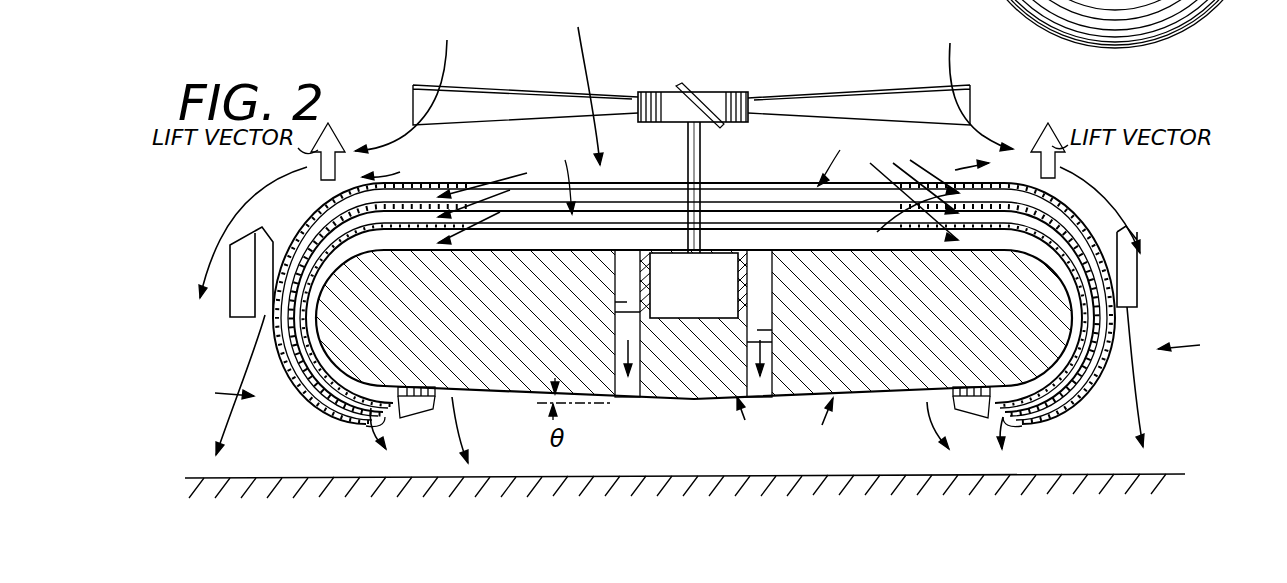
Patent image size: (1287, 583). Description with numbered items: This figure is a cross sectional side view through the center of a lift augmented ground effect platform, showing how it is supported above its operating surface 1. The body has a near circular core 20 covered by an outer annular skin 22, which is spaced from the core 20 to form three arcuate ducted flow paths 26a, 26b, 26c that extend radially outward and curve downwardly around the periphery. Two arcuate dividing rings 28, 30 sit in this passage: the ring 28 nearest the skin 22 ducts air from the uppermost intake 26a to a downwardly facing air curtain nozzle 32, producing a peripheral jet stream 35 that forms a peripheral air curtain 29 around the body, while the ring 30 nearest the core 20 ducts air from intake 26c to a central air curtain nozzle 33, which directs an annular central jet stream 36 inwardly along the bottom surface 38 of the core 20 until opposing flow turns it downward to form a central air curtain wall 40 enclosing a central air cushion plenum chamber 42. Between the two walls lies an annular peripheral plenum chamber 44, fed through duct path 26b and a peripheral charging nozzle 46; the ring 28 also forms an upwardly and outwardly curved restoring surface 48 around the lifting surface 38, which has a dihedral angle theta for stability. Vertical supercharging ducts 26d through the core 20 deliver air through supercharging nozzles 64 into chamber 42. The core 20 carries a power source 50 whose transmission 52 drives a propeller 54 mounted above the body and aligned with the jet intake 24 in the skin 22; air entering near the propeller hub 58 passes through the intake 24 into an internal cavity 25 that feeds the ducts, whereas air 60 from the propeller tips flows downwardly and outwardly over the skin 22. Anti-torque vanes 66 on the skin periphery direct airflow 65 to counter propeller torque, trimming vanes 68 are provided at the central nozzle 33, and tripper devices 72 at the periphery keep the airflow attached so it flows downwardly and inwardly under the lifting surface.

The operating surface 1 is at (1183, 474).
The core 20 is at (1132, 236).
The outer annular skin 22 is at (291, 214).
The jet intake 24 is at (841, 155).
The internal cavity 25 is at (565, 174).
The uppermost air intake duct 26a is at (482, 250).
The duct path 26b is at (485, 168).
The air intake duct 26c is at (428, 234).
The central supercharging ducts 26d is at (762, 264).
The dividing ring 28 is at (333, 408).
The peripheral air curtain 29 is at (708, 365).
The dividing ring 30 is at (293, 345).
The air curtain nozzle 32 is at (265, 317).
The central air curtain nozzle 33 is at (953, 391).
The peripheral jet stream 35 is at (1165, 398).
The central jet stream 36 is at (456, 396).
The bottom surface 38 is at (786, 425).
The central air curtain wall 40 is at (457, 440).
The central air cushion plenum chamber 42 is at (662, 445).
The peripheral plenum chamber 44 is at (323, 455).
The peripheral charging nozzle 46 is at (378, 432).
The restoring surface 48 is at (1058, 421).
The power source 50 is at (709, 297).
The power source transmission 52 is at (701, 146).
The propeller 54 is at (822, 84).
The propeller hub 58 is at (724, 92).
The air 60 is at (368, 146).
The supercharging nozzles 64 is at (626, 392).
The airflow 65 is at (400, 172).
The anti-torque vanes 66 is at (205, 233).
The trimming vanes 68 is at (978, 418).
The tripper devices 72 is at (1148, 303).